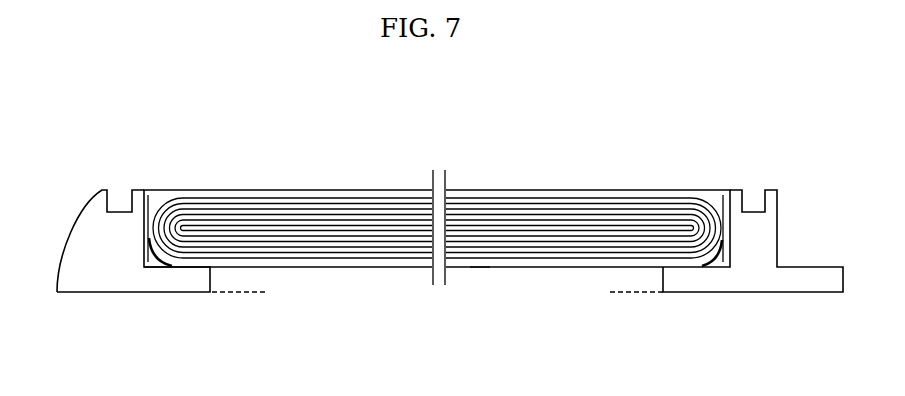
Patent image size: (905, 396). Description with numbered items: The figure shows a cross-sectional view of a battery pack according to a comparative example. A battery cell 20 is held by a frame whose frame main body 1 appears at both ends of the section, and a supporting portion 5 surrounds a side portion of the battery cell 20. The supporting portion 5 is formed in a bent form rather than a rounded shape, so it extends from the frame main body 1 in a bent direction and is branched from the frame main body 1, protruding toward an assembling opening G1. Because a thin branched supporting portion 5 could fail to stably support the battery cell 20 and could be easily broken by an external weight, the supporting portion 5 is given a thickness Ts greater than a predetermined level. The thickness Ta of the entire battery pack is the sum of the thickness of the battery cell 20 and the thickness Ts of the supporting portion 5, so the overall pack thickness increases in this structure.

The frame main body 1 is at (82, 263).
The supporting portion 5 is at (192, 282).
The battery cell 20 is at (363, 189).
The assembling opening G1 is at (481, 274).
The thickness of the supporting portion Ts is at (236, 228).
The thickness of the entire battery pack Ta is at (637, 330).